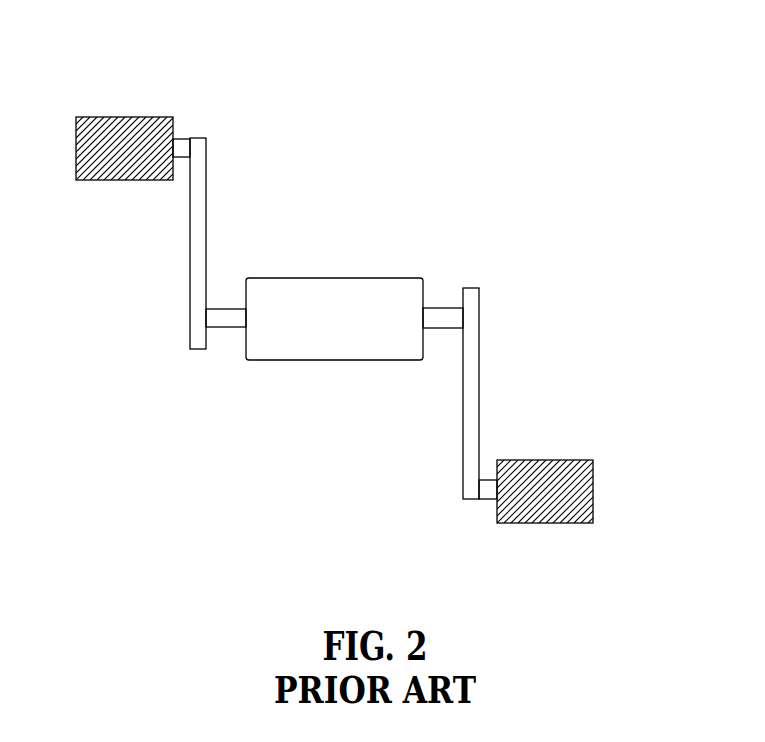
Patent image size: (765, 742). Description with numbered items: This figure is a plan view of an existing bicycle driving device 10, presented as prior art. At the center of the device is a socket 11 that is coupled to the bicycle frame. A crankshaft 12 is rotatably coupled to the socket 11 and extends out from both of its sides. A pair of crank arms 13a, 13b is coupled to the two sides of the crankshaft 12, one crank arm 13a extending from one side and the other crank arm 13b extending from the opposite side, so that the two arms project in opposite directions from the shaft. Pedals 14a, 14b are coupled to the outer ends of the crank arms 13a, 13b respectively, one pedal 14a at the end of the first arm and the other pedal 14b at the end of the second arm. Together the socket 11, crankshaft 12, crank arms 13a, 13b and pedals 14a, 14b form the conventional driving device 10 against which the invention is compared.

The bicycle driving device 10 is at (613, 116).
The socket 11 is at (333, 360).
The crankshaft 12 is at (443, 308).
The crank arm 13a is at (206, 215).
The crank arm 13b is at (479, 363).
The pedal 14a is at (123, 180).
The pedal 14b is at (545, 523).